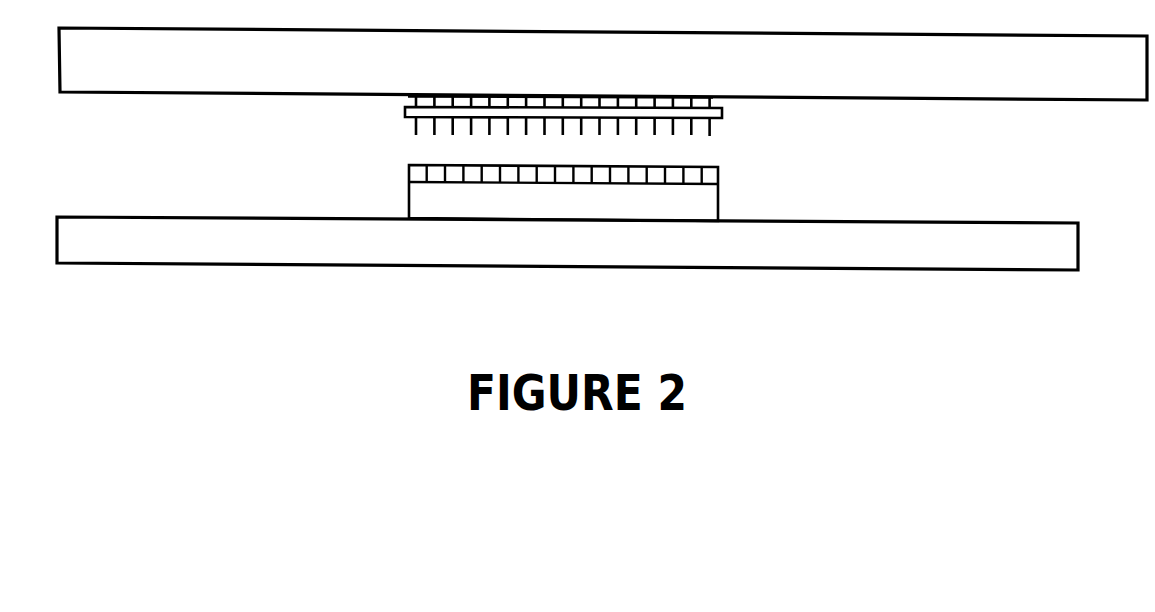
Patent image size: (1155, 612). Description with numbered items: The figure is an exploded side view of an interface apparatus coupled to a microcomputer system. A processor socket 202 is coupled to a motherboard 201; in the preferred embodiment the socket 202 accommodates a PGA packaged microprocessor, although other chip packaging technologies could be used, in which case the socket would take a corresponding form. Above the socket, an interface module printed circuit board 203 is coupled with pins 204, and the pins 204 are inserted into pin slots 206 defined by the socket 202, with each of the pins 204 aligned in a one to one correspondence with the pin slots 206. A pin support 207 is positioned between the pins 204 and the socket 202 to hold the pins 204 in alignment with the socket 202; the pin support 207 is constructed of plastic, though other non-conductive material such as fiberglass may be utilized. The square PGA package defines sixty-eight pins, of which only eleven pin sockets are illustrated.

The motherboard 201 is at (804, 282).
The '286 socket 202 is at (738, 203).
The interface module printed circuit board 203 is at (585, 78).
The pins 204 is at (399, 128).
The pin slots 206 is at (392, 171).
The pin support 207 is at (738, 116).